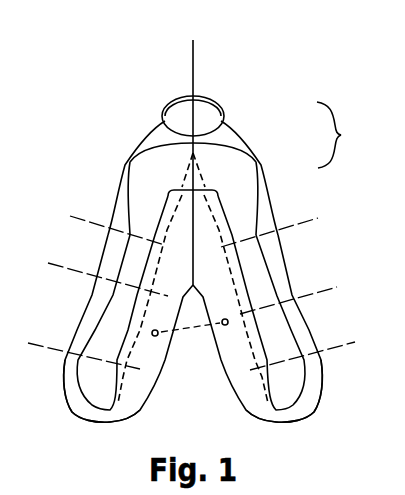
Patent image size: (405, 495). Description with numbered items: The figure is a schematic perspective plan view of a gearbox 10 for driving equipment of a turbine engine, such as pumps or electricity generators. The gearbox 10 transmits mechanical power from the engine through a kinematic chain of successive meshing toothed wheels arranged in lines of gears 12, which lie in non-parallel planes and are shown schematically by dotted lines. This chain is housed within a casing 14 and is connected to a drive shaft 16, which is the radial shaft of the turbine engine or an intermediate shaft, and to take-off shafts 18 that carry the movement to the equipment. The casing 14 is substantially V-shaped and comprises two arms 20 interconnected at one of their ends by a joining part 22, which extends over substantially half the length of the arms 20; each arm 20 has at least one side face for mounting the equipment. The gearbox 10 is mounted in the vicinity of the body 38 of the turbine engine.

The gearbox 10 is at (268, 93).
The lines of gears 12 is at (178, 212).
The casing 14 is at (258, 157).
The drive shaft 16 is at (190, 65).
The take-off shafts 18 is at (60, 268).
The arms 20 is at (83, 397).
The joining part 22 is at (343, 135).
The body of the turbine engine 38 is at (205, 112).